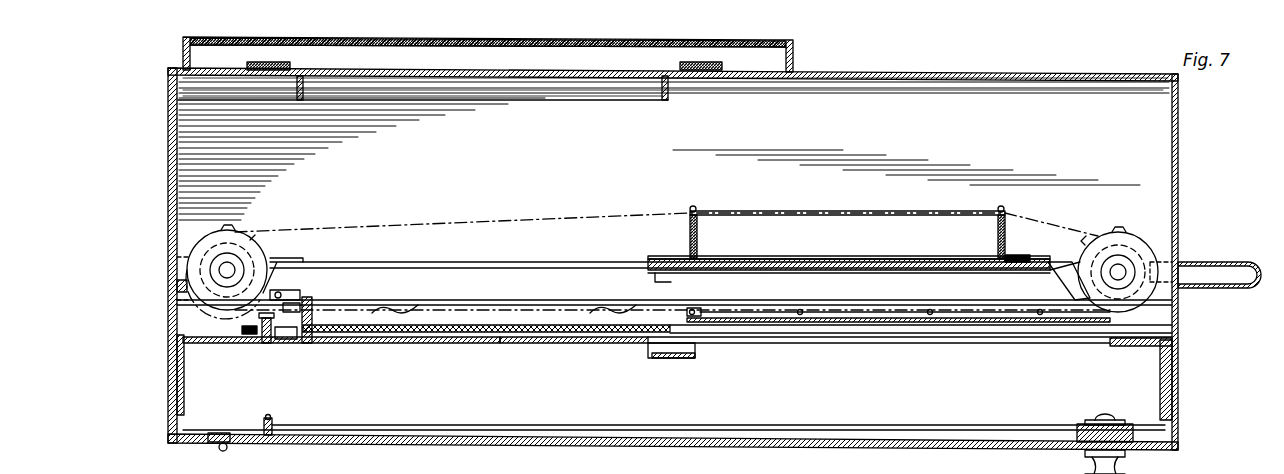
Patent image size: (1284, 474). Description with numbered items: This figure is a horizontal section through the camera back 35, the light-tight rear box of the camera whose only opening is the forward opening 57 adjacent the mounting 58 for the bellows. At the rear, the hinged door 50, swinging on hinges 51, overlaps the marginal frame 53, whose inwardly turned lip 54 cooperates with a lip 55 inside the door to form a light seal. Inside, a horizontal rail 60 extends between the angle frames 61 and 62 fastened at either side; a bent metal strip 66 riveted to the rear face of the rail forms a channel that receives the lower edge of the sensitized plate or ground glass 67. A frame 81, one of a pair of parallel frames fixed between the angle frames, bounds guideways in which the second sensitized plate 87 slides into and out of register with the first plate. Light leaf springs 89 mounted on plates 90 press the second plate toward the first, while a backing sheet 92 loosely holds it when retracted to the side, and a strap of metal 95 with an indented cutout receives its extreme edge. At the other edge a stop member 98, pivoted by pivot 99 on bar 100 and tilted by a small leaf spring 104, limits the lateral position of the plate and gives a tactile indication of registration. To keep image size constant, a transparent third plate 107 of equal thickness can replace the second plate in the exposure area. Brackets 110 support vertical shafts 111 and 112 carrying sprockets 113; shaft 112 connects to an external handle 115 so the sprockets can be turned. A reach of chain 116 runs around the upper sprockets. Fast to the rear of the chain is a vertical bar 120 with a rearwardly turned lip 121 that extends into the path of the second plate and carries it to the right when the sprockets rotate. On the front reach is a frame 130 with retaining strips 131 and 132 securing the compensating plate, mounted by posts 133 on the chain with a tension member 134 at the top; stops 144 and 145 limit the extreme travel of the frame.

The camera back 35 is at (1189, 137).
The door 50 is at (854, 444).
The hinges 51 is at (222, 448).
The marginal frame 53 is at (218, 434).
The inwardly turned lip 54 is at (267, 418).
The lip 55 is at (274, 428).
The forward opening 57 is at (617, 103).
The mounting 58 is at (797, 62).
The rail 60 is at (888, 337).
The angle frame 61 is at (184, 394).
The angle frame 62 is at (1160, 382).
The bent metal strip 66 is at (614, 342).
The sensitized plate or ground glass 67 is at (426, 342).
The frame 81 is at (803, 326).
The second sensitized plate 87 is at (538, 336).
The leaf springs 89 is at (410, 292).
The plates 90 is at (534, 302).
The backing sheet 92 is at (890, 294).
The strap of metal 95 is at (680, 358).
The stop member 98 is at (282, 341).
The pivot 99 is at (268, 343).
The bar 100 is at (303, 343).
The leaf spring 104 is at (248, 337).
The third plate 107 is at (858, 262).
The brackets 110 is at (178, 290).
The shaft 111 is at (215, 268).
The shaft 112 is at (1122, 272).
The sprockets 113 is at (205, 250).
The external handle 115 is at (1202, 294).
The chain 116 is at (486, 213).
The bar 120 is at (300, 290).
The lip 121 is at (312, 306).
The frame 130 is at (670, 271).
The retaining strip 131 is at (775, 257).
The retaining strip 132 is at (1035, 250).
The posts 133 is at (699, 236).
The tension member 134 is at (848, 212).
The stop 144 is at (300, 262).
The stop 145 is at (1082, 255).